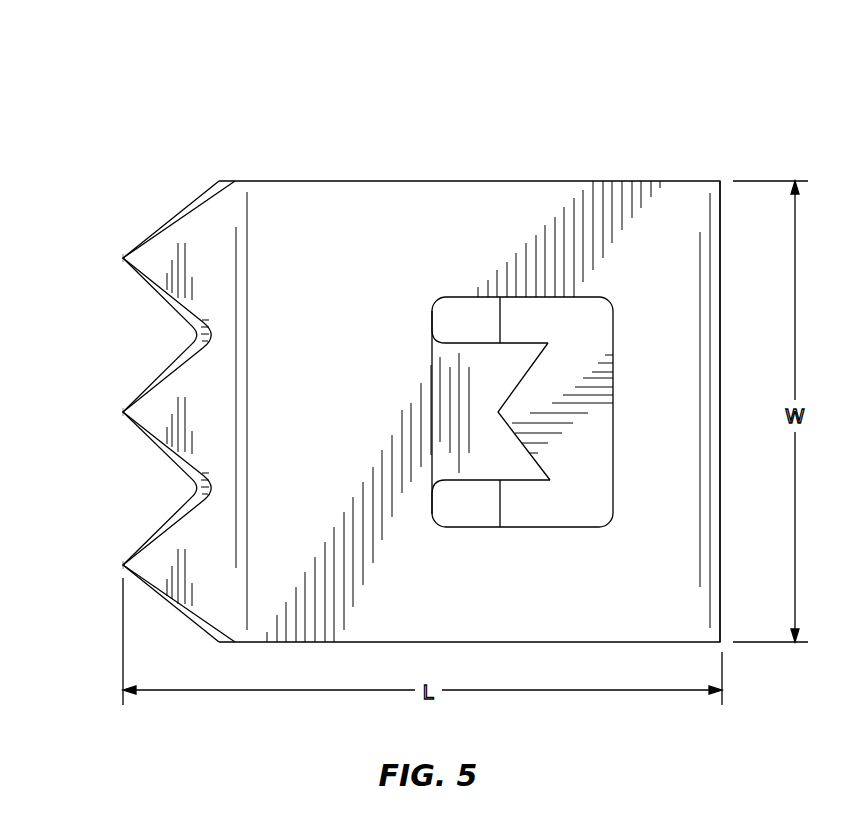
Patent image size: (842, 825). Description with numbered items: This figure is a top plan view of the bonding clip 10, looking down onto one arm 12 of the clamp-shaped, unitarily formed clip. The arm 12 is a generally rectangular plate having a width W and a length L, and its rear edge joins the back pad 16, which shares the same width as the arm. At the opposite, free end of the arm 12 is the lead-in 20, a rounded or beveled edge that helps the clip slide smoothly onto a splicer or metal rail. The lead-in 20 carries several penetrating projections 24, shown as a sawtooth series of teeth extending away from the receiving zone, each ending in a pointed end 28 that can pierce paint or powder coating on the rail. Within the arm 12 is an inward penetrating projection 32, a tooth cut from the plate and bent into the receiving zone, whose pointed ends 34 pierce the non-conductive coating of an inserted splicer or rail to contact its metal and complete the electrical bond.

The bonding clip 10 is at (722, 96).
The arm 12 is at (327, 257).
The back pad 16 is at (720, 285).
The lead-in 20 is at (232, 176).
The penetrating projection 24 is at (152, 288).
The pointed end 28 is at (123, 258).
The inward penetrating projection 32 is at (487, 378).
The pointed end 34 is at (552, 341).